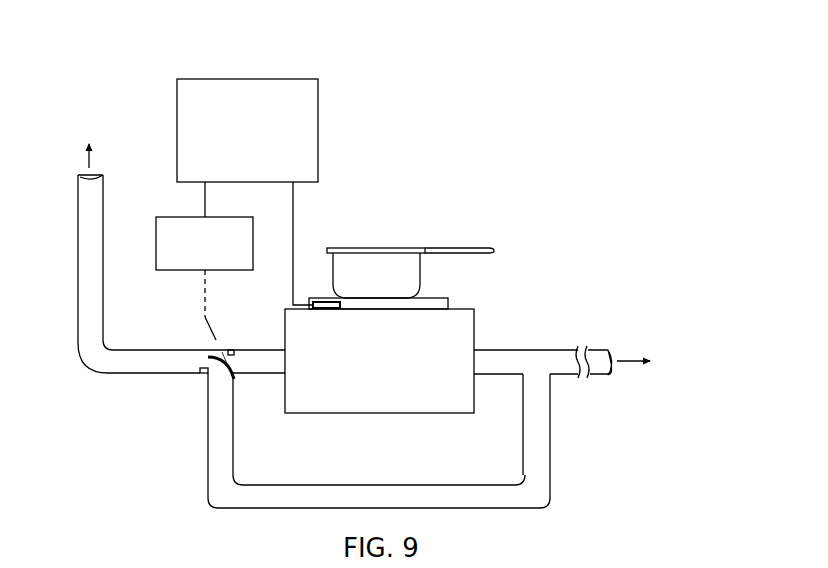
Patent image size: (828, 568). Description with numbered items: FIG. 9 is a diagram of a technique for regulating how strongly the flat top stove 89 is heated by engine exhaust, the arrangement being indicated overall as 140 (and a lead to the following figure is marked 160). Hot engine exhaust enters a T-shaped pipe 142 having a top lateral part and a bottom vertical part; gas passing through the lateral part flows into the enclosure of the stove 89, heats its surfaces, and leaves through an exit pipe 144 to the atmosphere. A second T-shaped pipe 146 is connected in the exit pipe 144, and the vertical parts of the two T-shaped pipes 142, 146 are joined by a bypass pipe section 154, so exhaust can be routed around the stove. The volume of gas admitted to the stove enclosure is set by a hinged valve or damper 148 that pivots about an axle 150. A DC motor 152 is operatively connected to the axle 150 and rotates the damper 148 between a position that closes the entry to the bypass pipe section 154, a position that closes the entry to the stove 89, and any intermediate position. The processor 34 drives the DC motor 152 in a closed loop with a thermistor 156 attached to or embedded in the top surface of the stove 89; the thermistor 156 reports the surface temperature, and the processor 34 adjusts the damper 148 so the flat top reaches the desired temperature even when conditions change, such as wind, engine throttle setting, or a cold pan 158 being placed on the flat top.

The exhaust heat recovery cooking system 140 is at (146, 63).
The processor 34 is at (320, 130).
The DC motor 152 is at (156, 238).
The cold pan 158 is at (380, 248).
The thermistor 156 is at (322, 310).
The flat top stove 89 is at (284, 322).
The exit pipe 144 is at (515, 350).
The second T-shaped pipe 146 is at (514, 386).
The bypass pipe section 154 is at (382, 485).
The hinged valve or damper 148 is at (207, 395).
The T-shaped pipe 142 is at (204, 379).
The axle 150 is at (239, 382).
The system of next figure 160 is at (161, 566).